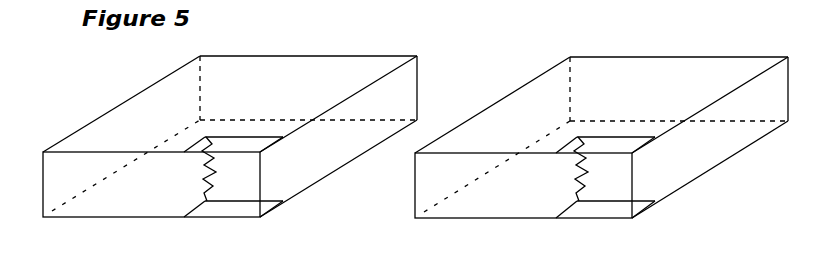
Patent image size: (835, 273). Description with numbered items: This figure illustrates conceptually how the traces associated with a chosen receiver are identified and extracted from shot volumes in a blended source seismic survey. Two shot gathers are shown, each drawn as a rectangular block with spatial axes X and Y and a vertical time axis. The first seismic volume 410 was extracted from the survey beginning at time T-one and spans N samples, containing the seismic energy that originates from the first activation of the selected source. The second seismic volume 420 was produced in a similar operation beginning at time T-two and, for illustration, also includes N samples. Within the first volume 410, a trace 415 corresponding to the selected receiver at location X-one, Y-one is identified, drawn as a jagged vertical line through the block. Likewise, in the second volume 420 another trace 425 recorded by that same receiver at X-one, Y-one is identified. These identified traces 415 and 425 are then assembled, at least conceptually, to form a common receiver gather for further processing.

The seismic volume 410 is at (284, 55).
The trace 415 is at (207, 136).
The seismic volume 420 is at (653, 56).
The trace 425 is at (578, 136).